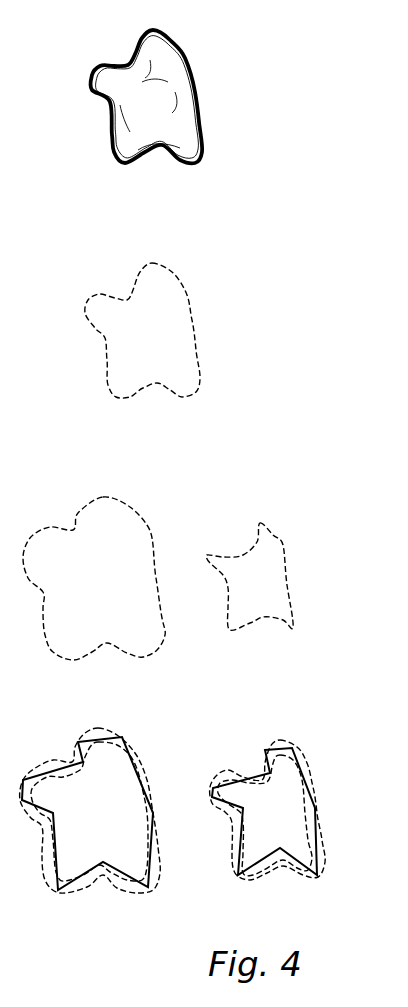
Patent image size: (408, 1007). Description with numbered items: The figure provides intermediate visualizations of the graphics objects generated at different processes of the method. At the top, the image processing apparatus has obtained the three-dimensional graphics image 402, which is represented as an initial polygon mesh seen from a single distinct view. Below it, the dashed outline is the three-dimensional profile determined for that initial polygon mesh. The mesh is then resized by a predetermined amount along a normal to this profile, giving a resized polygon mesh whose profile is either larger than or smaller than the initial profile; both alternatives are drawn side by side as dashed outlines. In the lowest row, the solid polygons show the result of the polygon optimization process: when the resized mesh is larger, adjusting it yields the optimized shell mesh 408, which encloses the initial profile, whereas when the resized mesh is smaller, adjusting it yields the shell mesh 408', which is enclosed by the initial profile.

The three-dimensional graphics image 402 is at (208, 64).
The optimized shell mesh 408 is at (127, 821).
The shell mesh 408' is at (272, 778).